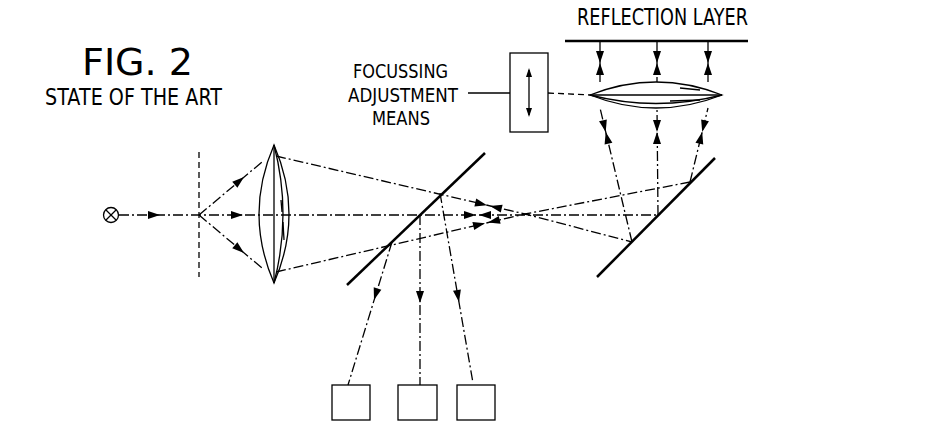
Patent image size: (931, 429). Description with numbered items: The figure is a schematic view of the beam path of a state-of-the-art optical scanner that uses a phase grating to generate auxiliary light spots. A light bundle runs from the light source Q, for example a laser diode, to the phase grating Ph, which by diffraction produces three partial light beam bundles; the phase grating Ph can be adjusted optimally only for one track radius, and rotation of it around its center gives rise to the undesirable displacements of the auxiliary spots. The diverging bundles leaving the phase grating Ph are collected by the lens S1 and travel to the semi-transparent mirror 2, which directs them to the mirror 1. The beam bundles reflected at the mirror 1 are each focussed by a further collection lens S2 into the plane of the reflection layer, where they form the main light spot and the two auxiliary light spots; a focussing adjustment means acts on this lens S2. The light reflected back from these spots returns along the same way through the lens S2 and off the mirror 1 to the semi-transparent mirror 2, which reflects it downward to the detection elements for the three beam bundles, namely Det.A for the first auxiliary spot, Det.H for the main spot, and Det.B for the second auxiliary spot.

The mirror 1 is at (708, 166).
The semi-transparent mirror 2 is at (465, 170).
The collection lens S1 is at (276, 146).
The further collection lens S2 is at (723, 95).
The phase grating Ph is at (202, 153).
The light source Q is at (116, 208).
The detection element for light spot A Det.A is at (342, 392).
The detection element for main light spot H Det.H is at (412, 391).
The detection element for light spot B Det.B is at (480, 392).